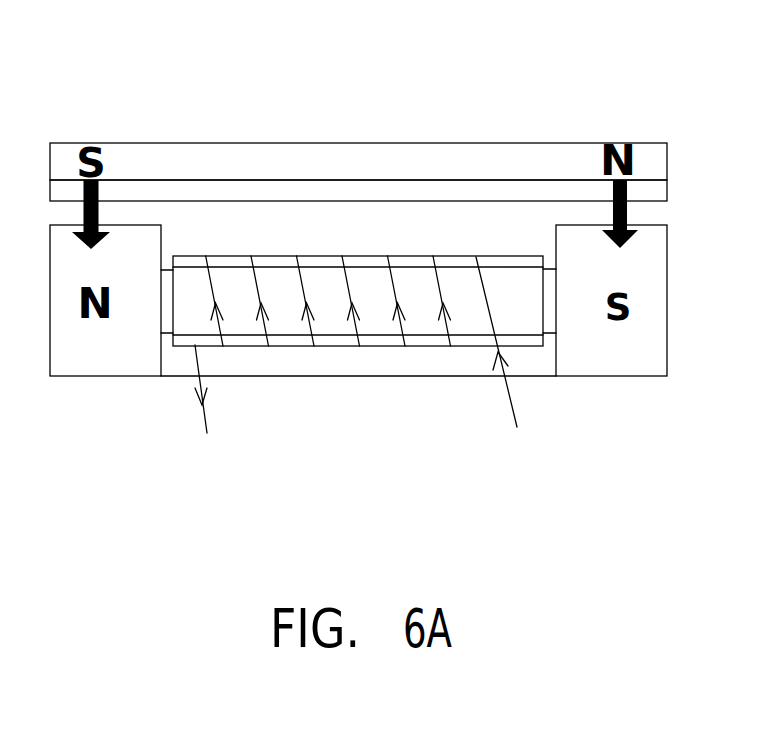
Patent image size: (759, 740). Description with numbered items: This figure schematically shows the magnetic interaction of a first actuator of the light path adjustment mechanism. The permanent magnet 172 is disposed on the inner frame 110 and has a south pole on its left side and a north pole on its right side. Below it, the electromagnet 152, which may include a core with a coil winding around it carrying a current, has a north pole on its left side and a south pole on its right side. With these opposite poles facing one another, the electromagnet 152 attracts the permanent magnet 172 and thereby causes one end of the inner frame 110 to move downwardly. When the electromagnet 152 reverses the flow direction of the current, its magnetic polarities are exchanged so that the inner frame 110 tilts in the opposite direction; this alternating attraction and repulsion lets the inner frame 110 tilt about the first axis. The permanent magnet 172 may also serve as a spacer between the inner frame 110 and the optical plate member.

The inner frame 110 is at (244, 189).
The permanent magnet 172 is at (358, 158).
The electromagnet 152 is at (343, 346).